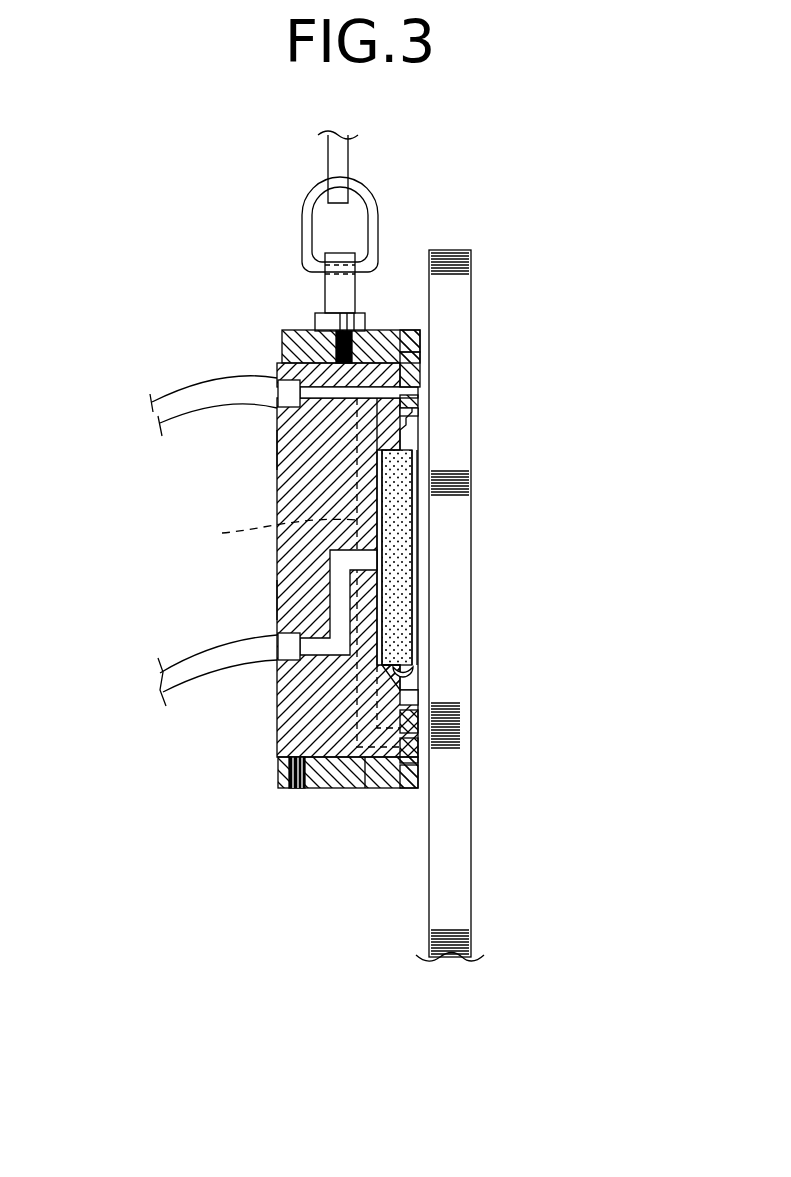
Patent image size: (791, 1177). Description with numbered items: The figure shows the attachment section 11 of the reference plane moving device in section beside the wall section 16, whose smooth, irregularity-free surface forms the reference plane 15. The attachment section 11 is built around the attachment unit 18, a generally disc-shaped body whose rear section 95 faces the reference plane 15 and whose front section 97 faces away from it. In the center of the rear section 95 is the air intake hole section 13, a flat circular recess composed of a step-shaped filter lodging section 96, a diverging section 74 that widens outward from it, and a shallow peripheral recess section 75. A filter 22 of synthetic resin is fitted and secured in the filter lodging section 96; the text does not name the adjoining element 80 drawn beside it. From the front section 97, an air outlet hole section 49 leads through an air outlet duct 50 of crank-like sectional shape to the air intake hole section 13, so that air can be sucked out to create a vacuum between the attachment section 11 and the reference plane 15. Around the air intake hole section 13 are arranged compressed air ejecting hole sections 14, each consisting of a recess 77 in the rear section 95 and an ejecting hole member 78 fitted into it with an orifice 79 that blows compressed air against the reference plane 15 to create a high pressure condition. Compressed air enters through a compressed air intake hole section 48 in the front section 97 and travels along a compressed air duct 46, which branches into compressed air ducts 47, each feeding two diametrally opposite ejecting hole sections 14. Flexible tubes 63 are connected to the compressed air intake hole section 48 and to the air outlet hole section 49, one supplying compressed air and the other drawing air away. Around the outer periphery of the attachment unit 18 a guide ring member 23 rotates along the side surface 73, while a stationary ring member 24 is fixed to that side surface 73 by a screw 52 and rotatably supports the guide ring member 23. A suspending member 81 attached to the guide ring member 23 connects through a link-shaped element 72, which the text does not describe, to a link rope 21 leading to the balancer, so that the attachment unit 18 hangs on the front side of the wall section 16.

The attachment section 11 is at (248, 882).
The air intake hole section 13 is at (460, 500).
The compressed air ejecting hole section 14 is at (433, 365).
The reference plane 15 is at (425, 896).
The wall section 16 is at (460, 273).
The attachment unit 18 is at (277, 505).
The link rope 21 is at (342, 158).
The filter 22 is at (412, 540).
The guide ring member 23 is at (365, 333).
The stationary ring member 24 is at (282, 335).
The compressed air duct 46 is at (277, 448).
The compressed air duct 47 is at (299, 469).
The compressed air intake hole section 48 is at (276, 385).
The air outlet hole section 49 is at (268, 663).
The air outlet duct 50 is at (277, 563).
The screw 52 is at (295, 790).
The flexible tube 63 is at (180, 395).
The chain link 72 is at (305, 214).
The side surface 73 is at (392, 790).
The diverging section 74 is at (415, 445).
The peripheral recess section 75 is at (420, 425).
The recess 77 is at (420, 336).
The ejecting hole member 78 is at (420, 360).
The orifice 79 is at (420, 390).
The pad liner 80 is at (412, 570).
The suspending member 81 is at (330, 290).
The rear section 95 is at (420, 410).
The filter lodging section 96 is at (418, 692).
The front section 97 is at (277, 598).